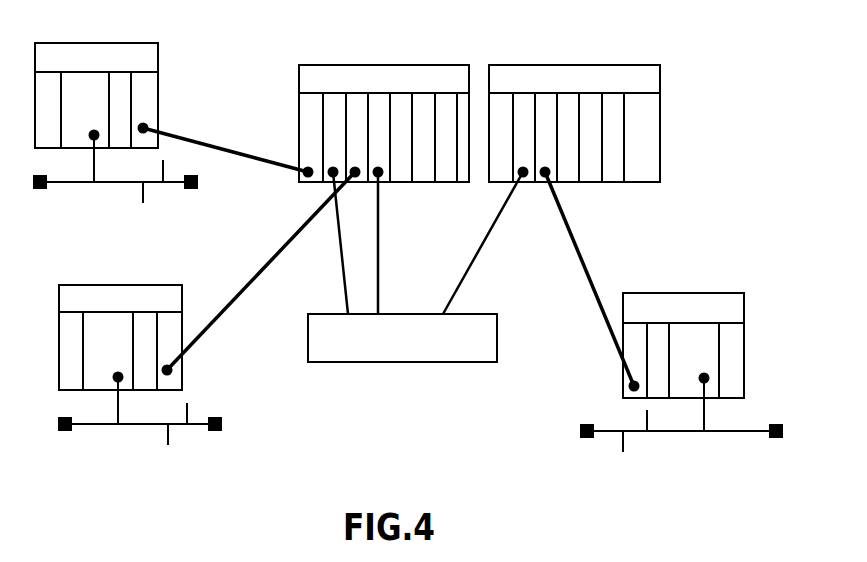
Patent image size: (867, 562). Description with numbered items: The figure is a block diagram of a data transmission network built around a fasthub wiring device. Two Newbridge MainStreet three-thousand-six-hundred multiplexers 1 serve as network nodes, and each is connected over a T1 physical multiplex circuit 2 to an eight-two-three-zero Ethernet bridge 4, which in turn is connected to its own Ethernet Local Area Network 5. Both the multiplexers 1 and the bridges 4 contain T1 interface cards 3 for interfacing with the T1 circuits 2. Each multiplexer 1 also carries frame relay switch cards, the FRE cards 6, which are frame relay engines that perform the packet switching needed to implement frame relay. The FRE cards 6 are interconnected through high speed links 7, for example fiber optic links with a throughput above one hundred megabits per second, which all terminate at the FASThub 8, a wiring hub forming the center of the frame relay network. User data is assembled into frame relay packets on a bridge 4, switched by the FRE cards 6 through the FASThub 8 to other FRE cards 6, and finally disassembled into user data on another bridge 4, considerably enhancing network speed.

The multiplexer 1 is at (440, 66).
The T1 physical multiplex circuit 2 is at (201, 145).
The T1 interface card 3 is at (152, 107).
The Ethernet bridge 4 is at (128, 50).
The Ethernet Local Area Network 5 is at (158, 185).
The frame relay switch card 6 is at (305, 97).
The high speed link 7 is at (381, 265).
The FASThub wiring hub 8 is at (462, 353).